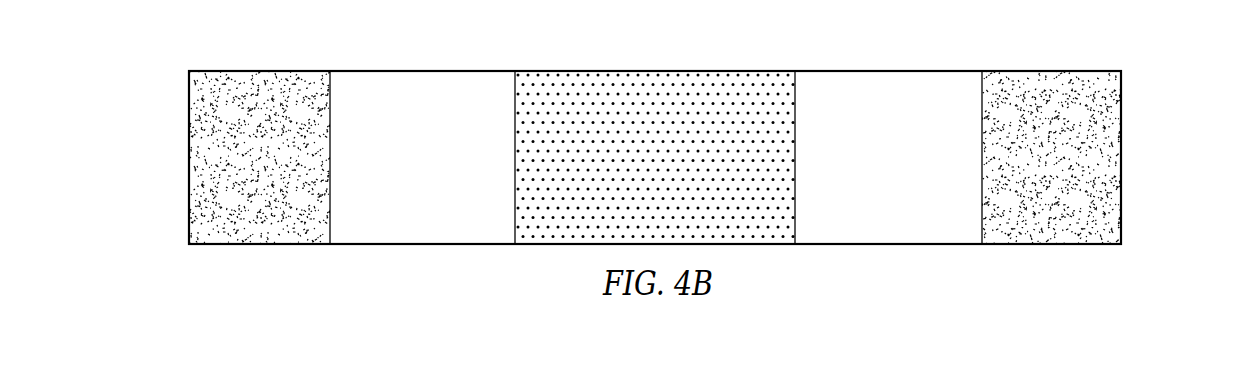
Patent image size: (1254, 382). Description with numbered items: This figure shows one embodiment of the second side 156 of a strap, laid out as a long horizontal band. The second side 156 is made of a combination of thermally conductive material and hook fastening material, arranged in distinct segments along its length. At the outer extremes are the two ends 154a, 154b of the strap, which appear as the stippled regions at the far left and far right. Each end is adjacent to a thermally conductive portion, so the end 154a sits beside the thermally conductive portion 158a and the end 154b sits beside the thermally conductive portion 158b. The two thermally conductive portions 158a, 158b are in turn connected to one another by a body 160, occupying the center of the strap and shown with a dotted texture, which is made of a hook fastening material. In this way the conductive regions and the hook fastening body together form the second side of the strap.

The end 154a is at (205, 113).
The end 154b is at (1100, 128).
The second side 156 is at (659, 143).
The thermally conductive portion 158a is at (428, 229).
The thermally conductive portion 158b is at (895, 228).
The body 160 is at (656, 97).